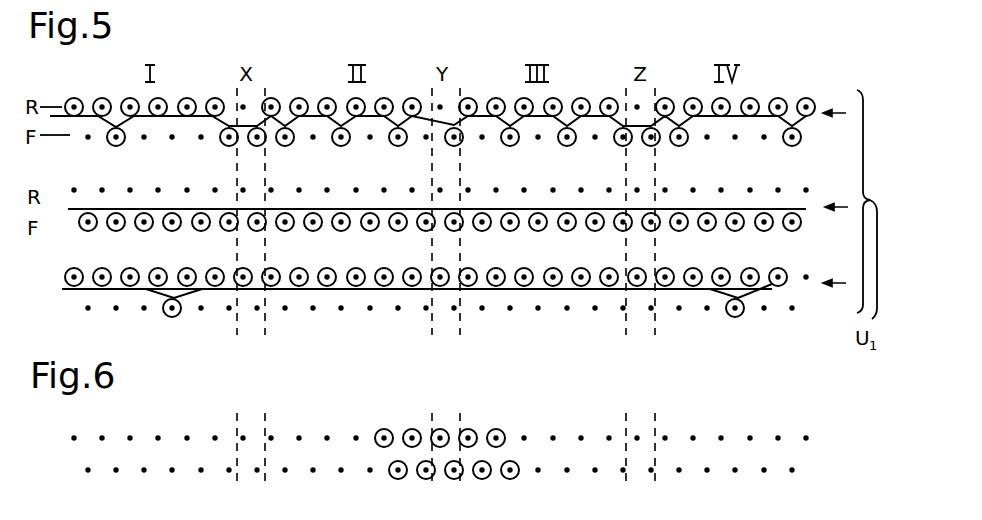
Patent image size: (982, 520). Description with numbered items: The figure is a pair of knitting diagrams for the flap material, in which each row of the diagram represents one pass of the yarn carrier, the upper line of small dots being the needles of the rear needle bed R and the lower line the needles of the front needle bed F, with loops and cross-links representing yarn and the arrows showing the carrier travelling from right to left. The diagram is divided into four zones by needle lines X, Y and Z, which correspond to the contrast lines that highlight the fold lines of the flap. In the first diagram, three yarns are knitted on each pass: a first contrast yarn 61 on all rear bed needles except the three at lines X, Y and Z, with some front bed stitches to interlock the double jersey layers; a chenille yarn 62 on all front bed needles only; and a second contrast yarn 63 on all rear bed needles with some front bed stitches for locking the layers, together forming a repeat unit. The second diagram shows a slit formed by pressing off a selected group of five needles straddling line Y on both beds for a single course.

The first contrast yarn 61 is at (806, 116).
The chenille yarn 62 is at (806, 209).
The second contrast yarn 63 is at (772, 284).